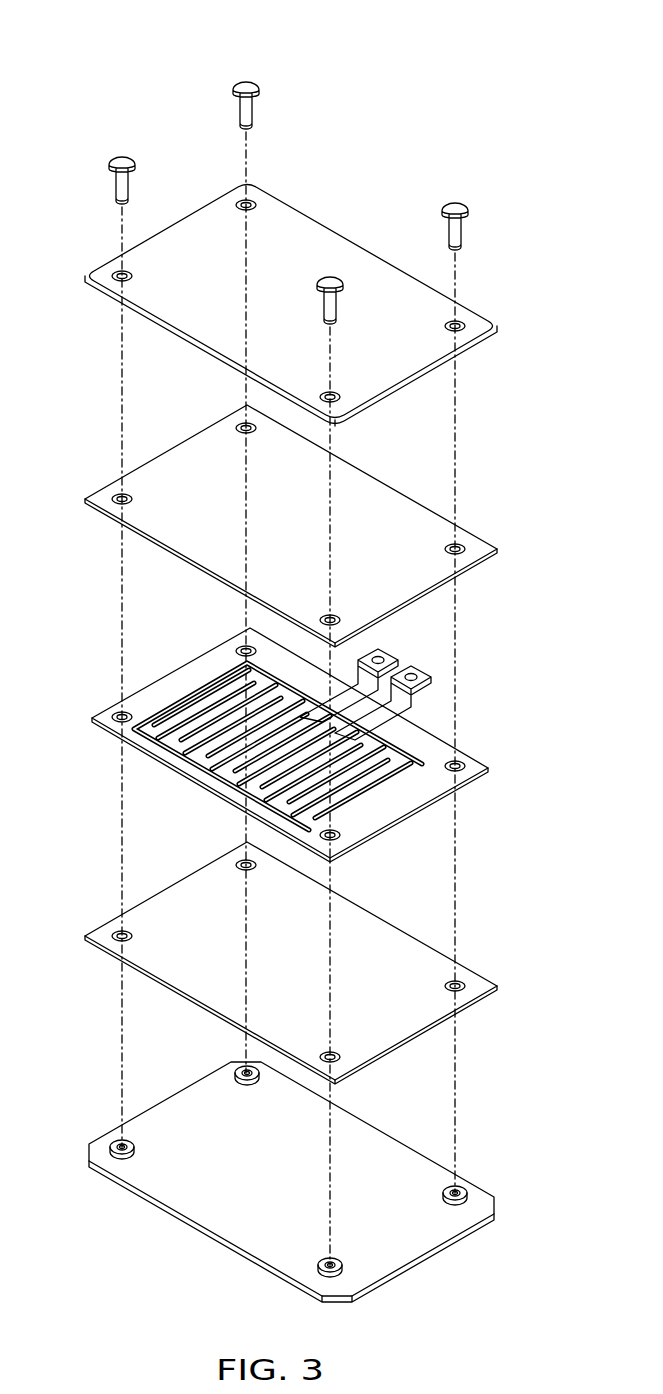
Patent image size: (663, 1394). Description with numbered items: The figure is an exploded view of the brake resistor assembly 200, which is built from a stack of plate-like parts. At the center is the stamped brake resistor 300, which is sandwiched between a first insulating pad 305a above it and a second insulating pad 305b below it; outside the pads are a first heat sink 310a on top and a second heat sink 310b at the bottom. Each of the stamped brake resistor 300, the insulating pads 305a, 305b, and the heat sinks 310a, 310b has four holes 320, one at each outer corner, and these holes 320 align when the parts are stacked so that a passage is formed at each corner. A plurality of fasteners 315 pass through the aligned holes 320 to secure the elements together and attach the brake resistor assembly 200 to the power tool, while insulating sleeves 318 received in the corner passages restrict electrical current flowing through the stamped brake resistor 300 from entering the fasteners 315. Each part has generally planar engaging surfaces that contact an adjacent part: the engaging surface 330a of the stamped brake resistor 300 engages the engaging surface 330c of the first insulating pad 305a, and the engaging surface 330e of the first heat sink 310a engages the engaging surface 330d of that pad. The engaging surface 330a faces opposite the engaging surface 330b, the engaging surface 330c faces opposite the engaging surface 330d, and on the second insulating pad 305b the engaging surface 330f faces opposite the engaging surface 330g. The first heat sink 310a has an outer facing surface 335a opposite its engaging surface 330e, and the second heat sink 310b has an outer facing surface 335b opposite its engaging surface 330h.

The brake resistor assembly 200 is at (100, 78).
The stamped brake resistor 300 is at (290, 727).
The first insulating pad 305a is at (320, 508).
The second insulating pad 305b is at (291, 948).
The first heat sink 310a is at (323, 289).
The second heat sink 310b is at (294, 1167).
The fasteners 315 is at (253, 108).
The insulating sleeves 318 is at (117, 1142).
The holes 320 is at (117, 275).
The engaging surface 330a is at (221, 668).
The engaging surface 330b is at (178, 775).
The engaging surface 330c is at (177, 565).
The engaging surface 330d is at (230, 440).
The engaging surface 330e is at (155, 332).
The engaging surface 330f is at (212, 866).
The engaging surface 330g is at (172, 995).
The engaging surface 330h is at (210, 1092).
The outer facing surface 335a is at (222, 218).
The outer facing surface 335b is at (186, 1228).